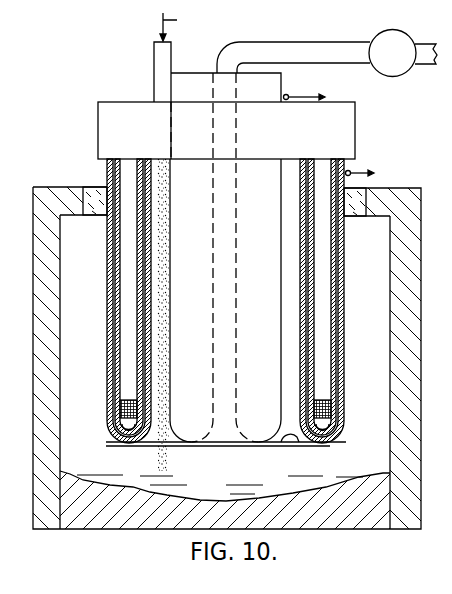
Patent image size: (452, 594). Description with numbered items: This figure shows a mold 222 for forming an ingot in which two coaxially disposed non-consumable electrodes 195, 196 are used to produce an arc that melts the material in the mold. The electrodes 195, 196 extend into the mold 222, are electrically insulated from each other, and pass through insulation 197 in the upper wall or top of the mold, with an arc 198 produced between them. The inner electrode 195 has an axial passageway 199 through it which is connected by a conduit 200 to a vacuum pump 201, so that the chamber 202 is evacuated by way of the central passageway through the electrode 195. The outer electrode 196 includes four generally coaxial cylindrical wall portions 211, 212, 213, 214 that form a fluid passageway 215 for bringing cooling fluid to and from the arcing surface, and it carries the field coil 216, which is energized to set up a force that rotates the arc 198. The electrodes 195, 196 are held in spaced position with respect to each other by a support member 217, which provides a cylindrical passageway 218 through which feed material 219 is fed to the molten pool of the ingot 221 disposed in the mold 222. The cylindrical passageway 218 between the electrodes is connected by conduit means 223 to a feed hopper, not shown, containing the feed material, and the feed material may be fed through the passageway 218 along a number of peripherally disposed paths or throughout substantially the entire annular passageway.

The electrode 195 is at (286, 95).
The electrode 196 is at (349, 168).
The insulation 197 is at (93, 192).
The arc 198 is at (289, 441).
The axial passageway 199 is at (213, 83).
The conduit 200 is at (322, 65).
The vacuum pump 201 is at (399, 77).
The chamber 202 is at (105, 467).
The cylindrical wall portion 211 is at (298, 270).
The cylindrical wall portion 212 is at (308, 290).
The cylindrical wall portion 213 is at (333, 272).
The cylindrical wall portion 214 is at (344, 291).
The fluid passageway 215 is at (338, 323).
The field coil 216 is at (328, 403).
The support member 217 is at (356, 135).
The cylindrical passageway 218 is at (164, 362).
The feed material 219 is at (168, 457).
The ingot 221 is at (294, 503).
The mold 222 is at (380, 182).
The conduit means 223 is at (153, 87).